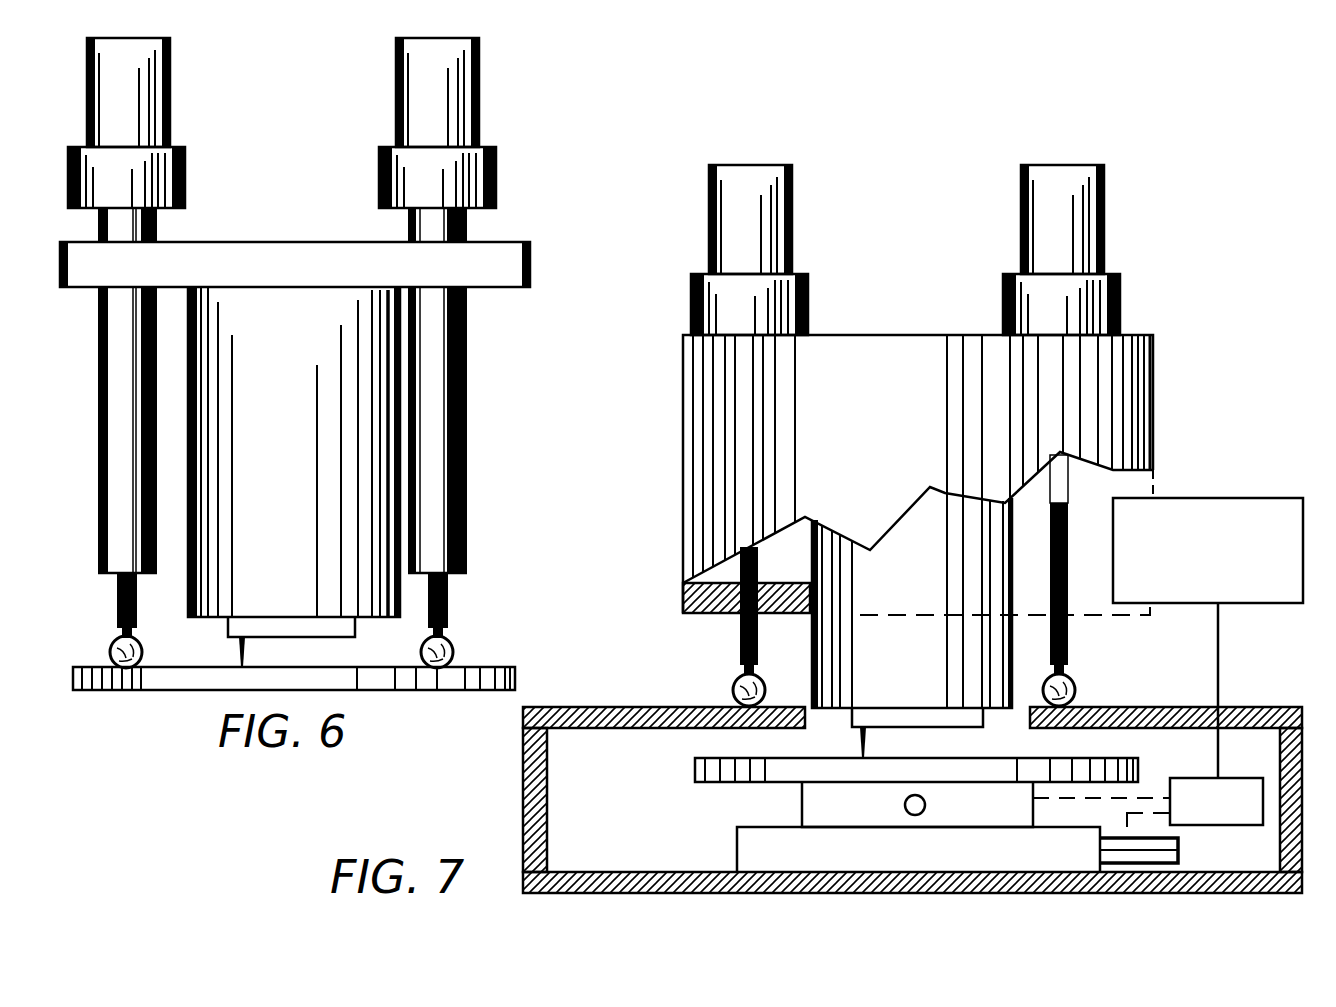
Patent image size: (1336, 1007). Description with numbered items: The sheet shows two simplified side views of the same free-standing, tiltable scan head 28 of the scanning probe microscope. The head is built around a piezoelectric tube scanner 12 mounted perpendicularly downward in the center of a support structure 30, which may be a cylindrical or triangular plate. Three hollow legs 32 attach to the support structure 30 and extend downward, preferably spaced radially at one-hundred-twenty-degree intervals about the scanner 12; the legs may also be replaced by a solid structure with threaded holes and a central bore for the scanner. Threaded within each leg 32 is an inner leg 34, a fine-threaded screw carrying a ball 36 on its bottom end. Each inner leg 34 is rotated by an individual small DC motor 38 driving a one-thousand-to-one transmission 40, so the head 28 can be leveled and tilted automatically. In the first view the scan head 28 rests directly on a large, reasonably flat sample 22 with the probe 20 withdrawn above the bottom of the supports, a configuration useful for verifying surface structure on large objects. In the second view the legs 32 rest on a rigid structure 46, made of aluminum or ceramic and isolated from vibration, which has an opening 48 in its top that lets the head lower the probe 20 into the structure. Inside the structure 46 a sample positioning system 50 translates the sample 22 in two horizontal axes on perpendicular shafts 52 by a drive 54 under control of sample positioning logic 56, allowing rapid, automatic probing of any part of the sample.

In FIG. 6, the piezoelectric tube scanner 12 is at (275, 312).
In FIG. 7, the piezoelectric tube scanner 12 is at (893, 583).
In FIG. 6, the probe 20 is at (243, 645).
In FIG. 7, the probe 20 is at (866, 736).
In FIG. 6, the sample 22 is at (480, 667).
In FIG. 7, the sample 22 is at (1010, 758).
In FIG. 6, the free-standing head 28 is at (538, 124).
In FIG. 7, the free-standing head 28 is at (1222, 144).
In FIG. 6, the support structure 30 is at (336, 242).
In FIG. 7, the support structure 30 is at (900, 335).
In FIG. 6, the hollow legs 32 is at (116, 443).
In FIG. 6, the inner leg 34 is at (116, 622).
In FIG. 7, the inner leg 34 is at (740, 637).
In FIG. 6, the ball 36 is at (109, 648).
In FIG. 7, the ball 36 is at (732, 688).
In FIG. 6, the DC motor 38 is at (148, 108).
In FIG. 7, the DC motor 38 is at (748, 227).
In FIG. 6, the transmission 40 is at (186, 174).
In FIG. 7, the transmission 40 is at (780, 312).
In FIG. 7, the rigid structure 46 is at (506, 777).
In FIG. 7, the opening 48 is at (826, 724).
In FIG. 7, the sample positioning system 50 is at (665, 808).
In FIG. 7, the perpendicular shafts 52 is at (905, 805).
In FIG. 7, the drive 54 is at (1190, 778).
In FIG. 7, the sample positioning logic 56 is at (1197, 498).